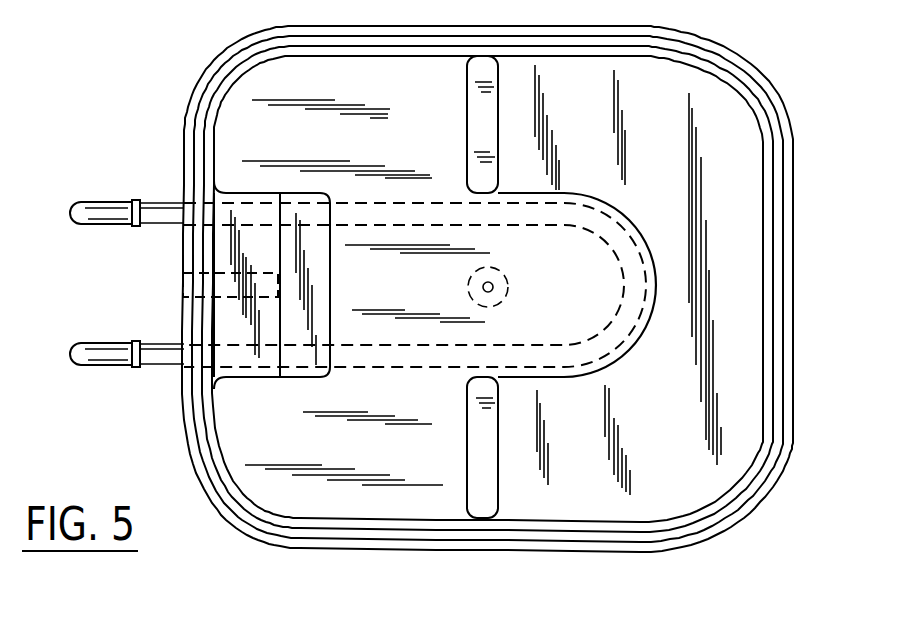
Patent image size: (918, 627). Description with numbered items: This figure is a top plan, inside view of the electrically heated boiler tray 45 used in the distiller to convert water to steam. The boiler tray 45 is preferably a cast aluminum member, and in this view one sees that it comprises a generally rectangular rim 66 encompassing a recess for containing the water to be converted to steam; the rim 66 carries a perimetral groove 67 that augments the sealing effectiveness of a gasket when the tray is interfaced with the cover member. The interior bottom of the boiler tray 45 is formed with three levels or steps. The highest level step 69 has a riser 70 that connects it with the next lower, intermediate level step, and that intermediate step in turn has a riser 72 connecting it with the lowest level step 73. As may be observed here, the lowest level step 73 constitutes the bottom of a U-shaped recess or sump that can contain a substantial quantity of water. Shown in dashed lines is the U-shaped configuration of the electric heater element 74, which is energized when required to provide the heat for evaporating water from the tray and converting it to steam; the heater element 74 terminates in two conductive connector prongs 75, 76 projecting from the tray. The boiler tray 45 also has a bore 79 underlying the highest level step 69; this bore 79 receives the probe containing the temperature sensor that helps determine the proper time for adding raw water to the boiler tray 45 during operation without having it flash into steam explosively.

The boiler tray 45 is at (186, 96).
The rim 66 is at (815, 124).
The inner housing wall 67 is at (757, 78).
The highest level step 69 is at (258, 372).
The riser 70 is at (315, 288).
The riser 72 is at (475, 128).
The lowest level step 73 is at (718, 475).
The electric heater element 74 is at (612, 218).
The conductive connector prongs 75 is at (93, 210).
The second plug pin 76 is at (95, 355).
The bore 79 is at (183, 297).